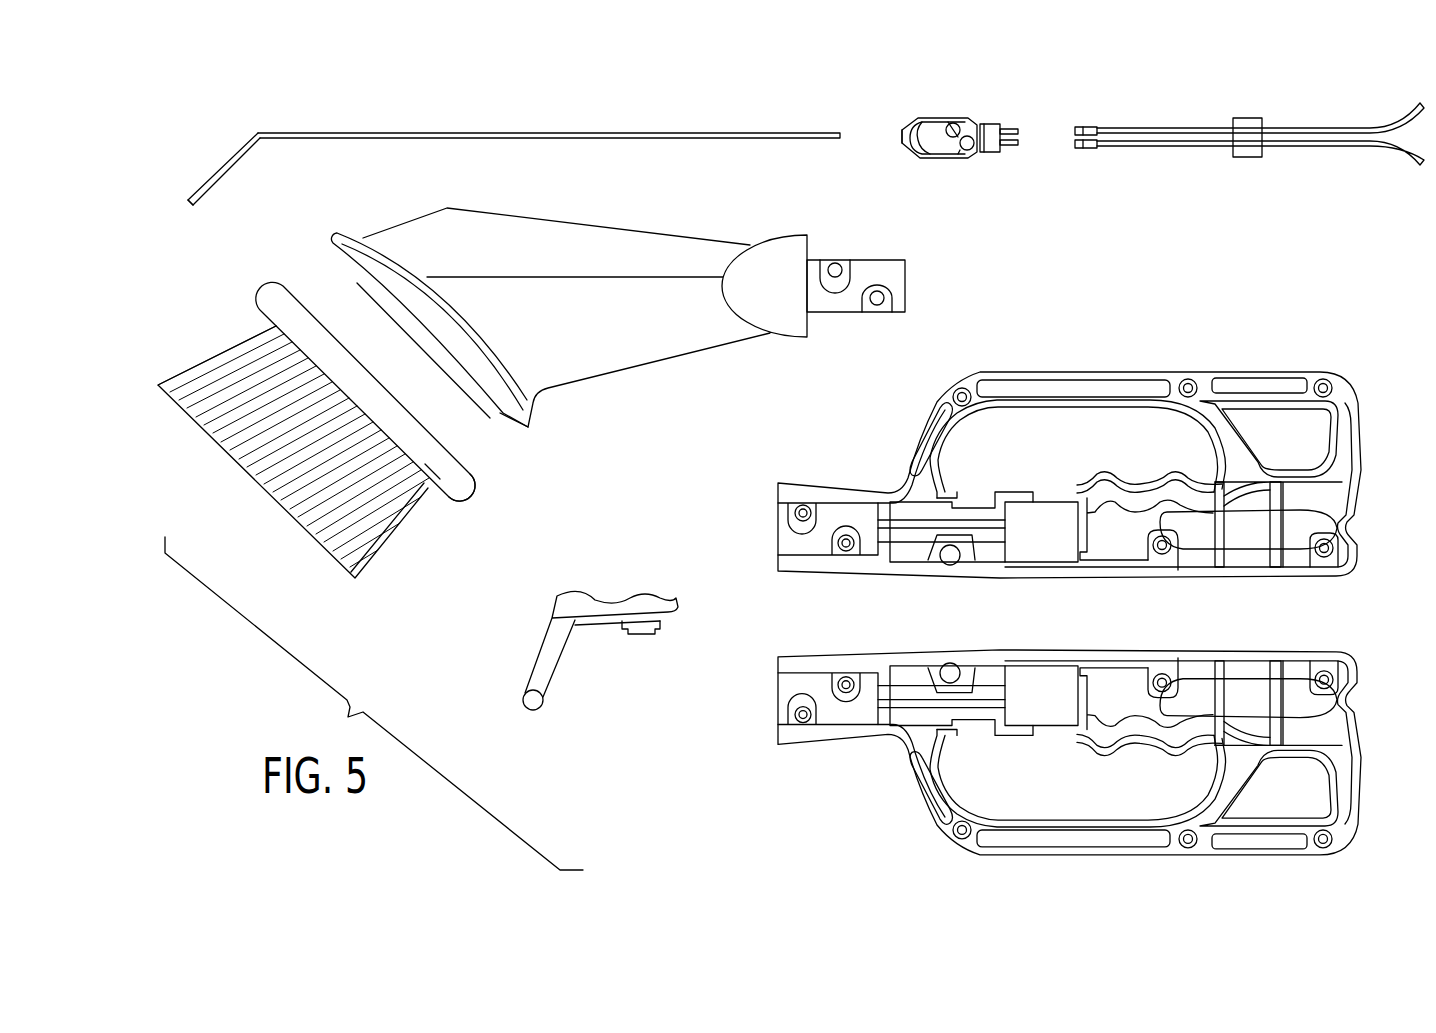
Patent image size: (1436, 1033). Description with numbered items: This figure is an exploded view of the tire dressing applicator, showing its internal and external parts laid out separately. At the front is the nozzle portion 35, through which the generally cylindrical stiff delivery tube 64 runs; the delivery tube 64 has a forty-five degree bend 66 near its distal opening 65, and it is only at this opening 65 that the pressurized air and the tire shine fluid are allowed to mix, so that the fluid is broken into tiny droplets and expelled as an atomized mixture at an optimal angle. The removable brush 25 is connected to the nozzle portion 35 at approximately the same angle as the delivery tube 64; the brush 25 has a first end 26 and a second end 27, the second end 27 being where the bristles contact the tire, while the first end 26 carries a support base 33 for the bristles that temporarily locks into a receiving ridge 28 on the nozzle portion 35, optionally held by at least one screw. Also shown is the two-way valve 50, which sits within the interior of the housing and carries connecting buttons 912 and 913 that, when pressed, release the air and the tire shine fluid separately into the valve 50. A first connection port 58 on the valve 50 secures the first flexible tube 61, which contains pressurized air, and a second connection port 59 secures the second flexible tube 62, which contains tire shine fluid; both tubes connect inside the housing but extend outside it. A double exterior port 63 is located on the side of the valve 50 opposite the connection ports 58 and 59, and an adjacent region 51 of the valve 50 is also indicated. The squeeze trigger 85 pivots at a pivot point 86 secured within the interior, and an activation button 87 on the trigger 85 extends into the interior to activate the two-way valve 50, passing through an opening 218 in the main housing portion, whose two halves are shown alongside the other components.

The removable brush 25 is at (390, 527).
The first end of the removable brush 26 is at (423, 422).
The second end of the removable brush 27 is at (293, 518).
The receiving ridge 28 is at (415, 347).
The support base 33 is at (453, 482).
The nozzle portion 35 is at (615, 347).
The two-way valve 50 is at (933, 152).
The connector cavity 51 is at (923, 130).
The first connection port 58 is at (1012, 124).
The second connection port 59 is at (1012, 152).
The first flexible tube 61 is at (1122, 130).
The second flexible tube 62 is at (1122, 148).
The double exterior port 63 is at (900, 137).
The delivery tube 64 is at (795, 141).
The opening 65 is at (190, 205).
The forty-five degree bend 66 is at (257, 134).
The squeeze trigger 85 is at (608, 596).
The pivot point 86 is at (534, 704).
The activation button 87 is at (640, 636).
The opening 218 is at (1055, 498).
The connecting button 912 is at (963, 132).
The connecting button 913 is at (947, 153).